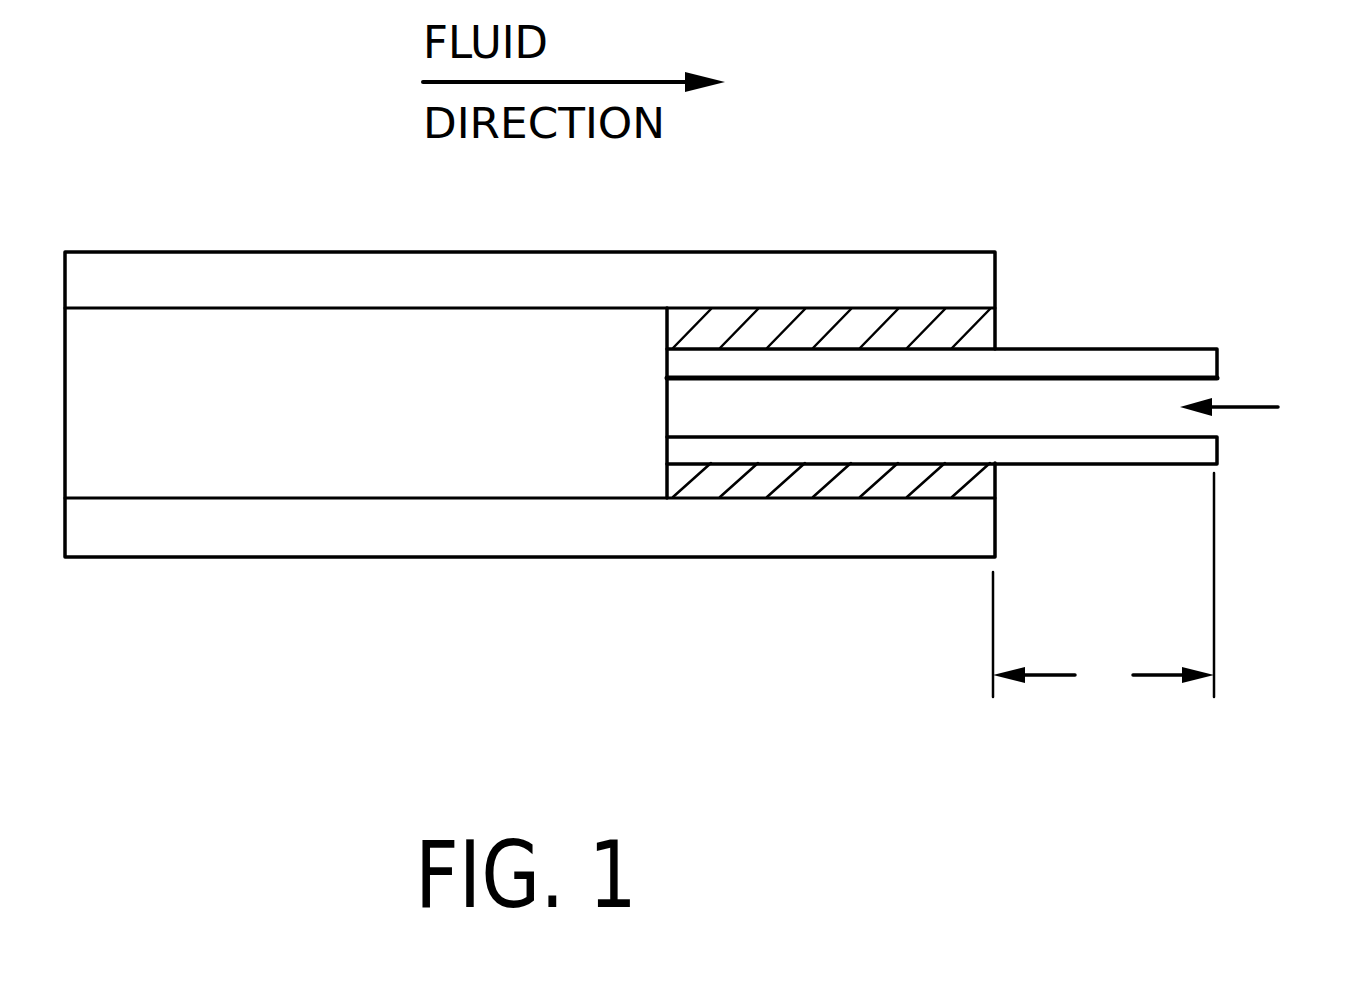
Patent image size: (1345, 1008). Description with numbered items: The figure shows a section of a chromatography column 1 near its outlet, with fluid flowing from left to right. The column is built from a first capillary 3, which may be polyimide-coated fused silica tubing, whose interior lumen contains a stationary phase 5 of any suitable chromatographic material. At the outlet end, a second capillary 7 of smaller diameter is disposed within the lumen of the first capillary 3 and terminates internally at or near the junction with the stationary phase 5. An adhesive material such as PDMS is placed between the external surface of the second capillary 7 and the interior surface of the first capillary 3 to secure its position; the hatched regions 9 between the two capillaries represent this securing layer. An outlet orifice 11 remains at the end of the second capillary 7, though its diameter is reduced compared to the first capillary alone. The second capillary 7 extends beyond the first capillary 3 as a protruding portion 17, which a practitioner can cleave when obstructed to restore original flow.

The chromatography column 1 is at (773, 702).
The first capillary 3 is at (957, 252).
The stationary phase 5 is at (397, 470).
The second capillary 7 is at (1180, 349).
The seal / spacer ring 9 is at (995, 322).
The outlet orifice 11 is at (1262, 407).
The protruding portion 17 is at (1103, 587).